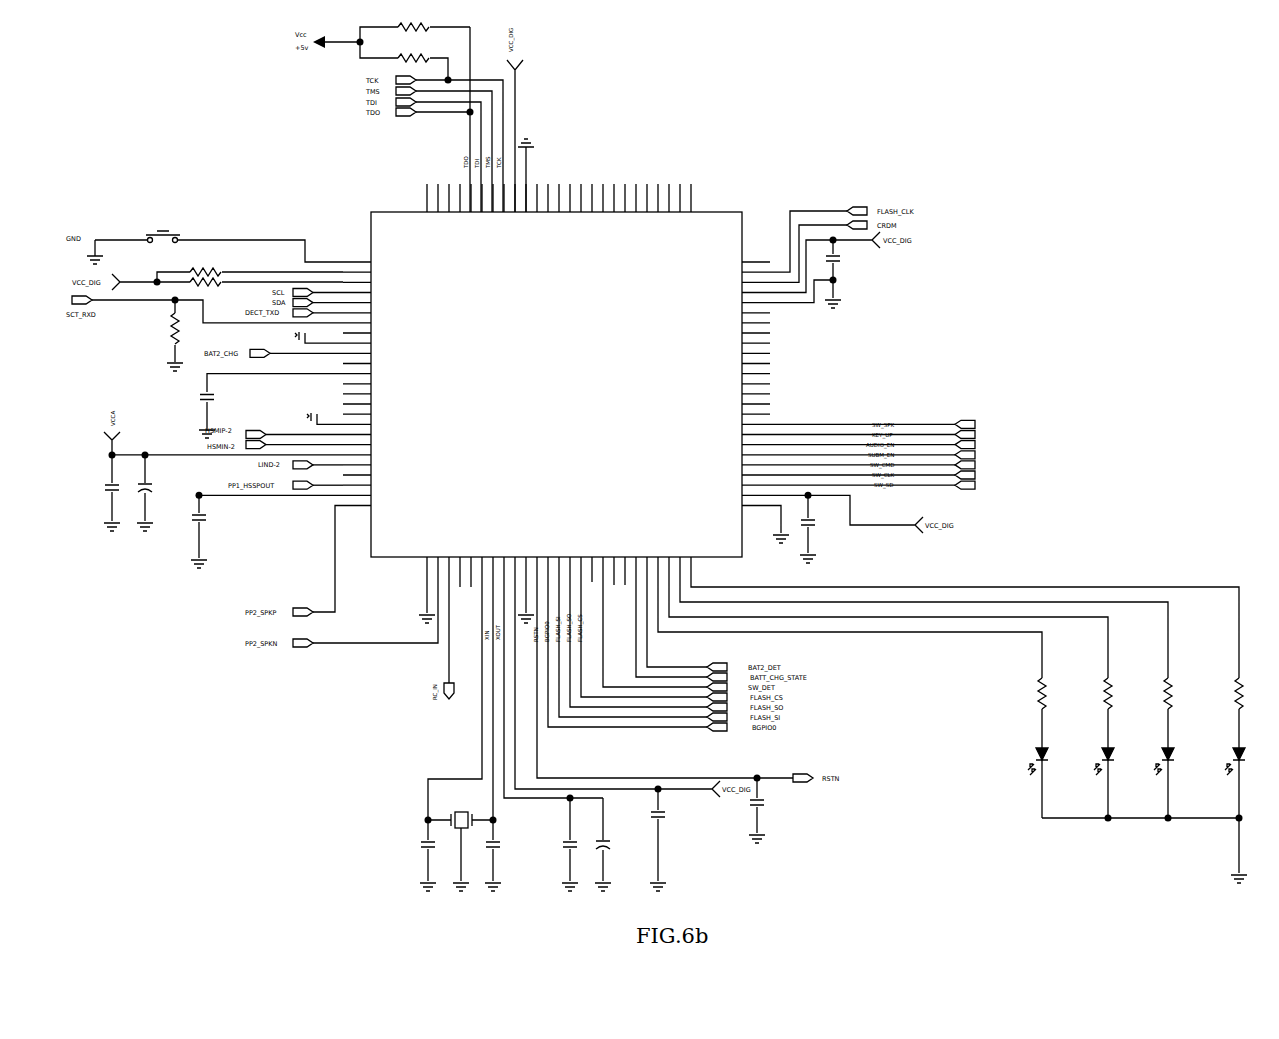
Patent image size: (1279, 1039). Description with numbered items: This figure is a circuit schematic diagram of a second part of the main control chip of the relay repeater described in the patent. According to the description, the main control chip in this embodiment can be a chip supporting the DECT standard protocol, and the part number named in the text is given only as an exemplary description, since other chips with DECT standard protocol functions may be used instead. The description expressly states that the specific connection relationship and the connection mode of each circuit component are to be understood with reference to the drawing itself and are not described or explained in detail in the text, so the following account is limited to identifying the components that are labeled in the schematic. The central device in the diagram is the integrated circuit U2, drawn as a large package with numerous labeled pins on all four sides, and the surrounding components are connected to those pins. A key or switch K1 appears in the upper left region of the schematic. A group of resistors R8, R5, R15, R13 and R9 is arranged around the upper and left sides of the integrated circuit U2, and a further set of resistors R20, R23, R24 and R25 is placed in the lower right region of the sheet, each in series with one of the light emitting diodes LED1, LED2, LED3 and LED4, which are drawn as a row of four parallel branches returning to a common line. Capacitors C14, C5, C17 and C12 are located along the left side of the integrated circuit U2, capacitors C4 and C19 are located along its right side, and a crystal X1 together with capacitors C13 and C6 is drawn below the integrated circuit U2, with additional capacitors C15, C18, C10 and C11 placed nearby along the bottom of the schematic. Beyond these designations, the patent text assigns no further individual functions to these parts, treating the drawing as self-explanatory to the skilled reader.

The DES6200X08LC microcontroller U2 is at (556, 385).
The page key switch K1 is at (219, 234).
The resistor 1K R8 is at (415, 32).
The resistor 10K R5 is at (404, 61).
The resistor 4.7K R15 is at (250, 272).
The resistor 4.7K R13 is at (250, 288).
The resistor NC R9 is at (169, 335).
The capacitor 1uF C14 is at (258, 406).
The capacitor 104 C5 is at (102, 493).
The capacitor 10uF C17 is at (158, 493).
The capacitor 104 C12 is at (258, 520).
The capacitor 104 C4 is at (841, 274).
The capacitor 104 C19 is at (816, 529).
The capacitor 15pF C13 is at (416, 855).
The capacitor 15pF C6 is at (503, 855).
The crystal 12.524MHz X1 is at (460, 841).
The capacitor 104 C15 is at (556, 844).
The capacitor 10uF C18 is at (617, 844).
The capacitor 104 C10 is at (665, 840).
The capacitor 1uF C11 is at (746, 810).
The resistor 330R R20 is at (1027, 693).
The resistor 330R R23 is at (1093, 693).
The resistor 330R R24 is at (1153, 693).
The resistor 330R R25 is at (1224, 693).
The blue LED PP3 on line LED1 is at (1045, 799).
The blue LED PP2 on line LED2 is at (1111, 799).
The blue LED PP1 on line LED3 is at (1171, 799).
The red status LED LED4 is at (1242, 799).